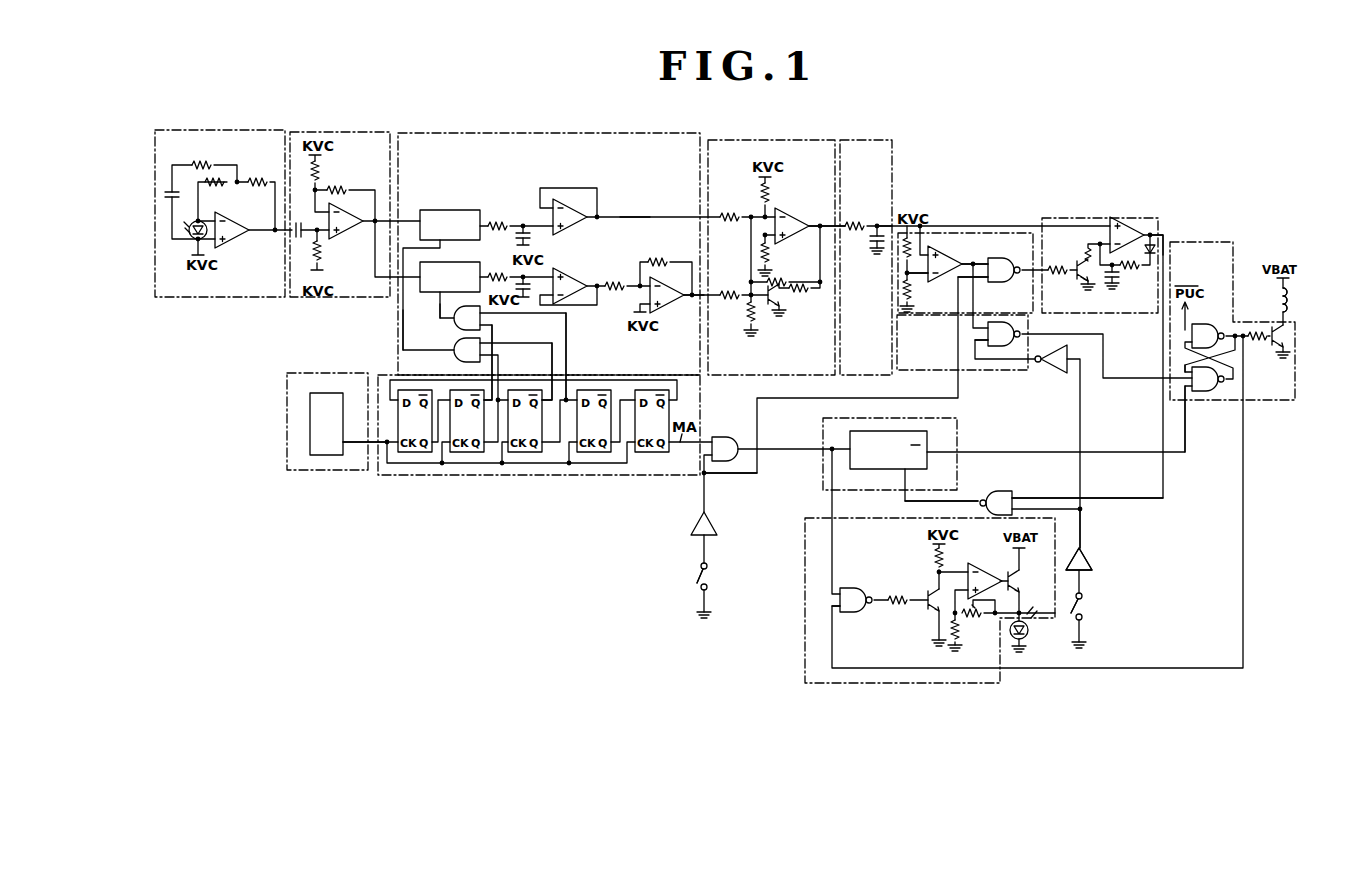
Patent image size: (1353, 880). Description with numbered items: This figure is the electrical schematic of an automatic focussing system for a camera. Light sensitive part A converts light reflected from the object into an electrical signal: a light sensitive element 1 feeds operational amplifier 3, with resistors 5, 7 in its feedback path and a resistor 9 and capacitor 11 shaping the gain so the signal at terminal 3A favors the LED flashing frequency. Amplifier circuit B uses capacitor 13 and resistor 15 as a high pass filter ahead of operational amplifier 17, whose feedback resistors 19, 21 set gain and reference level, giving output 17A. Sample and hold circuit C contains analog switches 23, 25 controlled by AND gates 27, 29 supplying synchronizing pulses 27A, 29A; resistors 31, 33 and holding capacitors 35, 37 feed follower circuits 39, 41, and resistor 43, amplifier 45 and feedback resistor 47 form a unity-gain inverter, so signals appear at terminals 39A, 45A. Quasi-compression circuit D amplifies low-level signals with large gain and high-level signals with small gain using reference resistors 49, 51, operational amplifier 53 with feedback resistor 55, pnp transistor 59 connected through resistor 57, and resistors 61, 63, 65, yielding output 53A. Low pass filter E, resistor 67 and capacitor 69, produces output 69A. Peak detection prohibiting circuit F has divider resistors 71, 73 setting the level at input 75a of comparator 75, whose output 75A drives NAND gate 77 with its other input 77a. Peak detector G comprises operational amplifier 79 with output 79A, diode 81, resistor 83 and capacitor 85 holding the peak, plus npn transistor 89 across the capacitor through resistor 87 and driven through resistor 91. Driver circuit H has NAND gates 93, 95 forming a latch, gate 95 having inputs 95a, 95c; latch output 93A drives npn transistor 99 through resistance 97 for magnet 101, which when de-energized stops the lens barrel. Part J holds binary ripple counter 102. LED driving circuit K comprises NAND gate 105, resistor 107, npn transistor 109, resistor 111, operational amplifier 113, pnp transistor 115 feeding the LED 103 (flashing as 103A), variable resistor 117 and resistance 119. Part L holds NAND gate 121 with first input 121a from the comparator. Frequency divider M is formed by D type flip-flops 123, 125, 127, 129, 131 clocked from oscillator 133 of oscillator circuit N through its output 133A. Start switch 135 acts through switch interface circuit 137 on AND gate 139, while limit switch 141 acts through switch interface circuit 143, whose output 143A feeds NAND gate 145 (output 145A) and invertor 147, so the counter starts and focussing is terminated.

The light sensitive element 1 is at (191, 222).
The operational amplifier 3 is at (230, 239).
The output terminal 3A is at (275, 234).
The resistor 5 is at (216, 185).
The resistor 7 is at (258, 186).
The resistor 9 is at (202, 163).
The capacitor 11 is at (165, 201).
The capacitor 13 is at (299, 238).
The resistor 15 is at (321, 256).
The operational amplifier 17 is at (350, 235).
The output signal of amplifier circuit 17A is at (374, 217).
The resistor 19 is at (339, 186).
The resistor 21 is at (311, 172).
The analog switch 23 is at (450, 225).
The analog switch 25 is at (450, 277).
The AND gate 27 is at (467, 318).
The synchronizing pulses 27A is at (440, 310).
The AND gate 29 is at (467, 350).
The synchronizing pulses 29A is at (403, 348).
The resistor 31 is at (499, 220).
The resistor 33 is at (499, 271).
The voltage holding capacitor 35 is at (527, 239).
The voltage holding capacitor 37 is at (527, 286).
The follower circuit 39 is at (572, 223).
The output terminal of follower circuit 39A is at (645, 215).
The second follower circuit 41 is at (571, 282).
The resistor 43 is at (616, 291).
The amplifier 45 is at (672, 310).
The output terminal of invertor 45A is at (692, 298).
The resistor 47 is at (661, 258).
The resistor 49 is at (770, 197).
The resistor 51 is at (770, 255).
The operational amplifier 53 is at (795, 211).
The output terminal of quasi-compression circuit 53A is at (822, 224).
The resistor 55 is at (783, 280).
The resistor 57 is at (800, 292).
The pnp transistor 59 is at (772, 308).
The resistor 61 is at (730, 212).
The resistor 63 is at (727, 292).
The resistor 65 is at (746, 313).
The resistor 67 is at (856, 220).
The capacitor 69 is at (871, 242).
The output terminal of low pass filter 69A is at (877, 222).
The resistor 71 is at (912, 245).
The resistor 73 is at (903, 290).
The comparator 75 is at (945, 268).
The output terminal of comparator 75A is at (973, 262).
The input terminal of comparator 75a is at (935, 280).
The NAND gate 77 is at (1004, 270).
The input terminal of NAND gate 77a is at (973, 279).
The operational amplifier 79 is at (1124, 221).
The output terminal of amplifier 79A is at (1163, 240).
The diode 81 is at (1150, 262).
The resistor 83 is at (1135, 270).
The capacitor 85 is at (1114, 280).
The resistor 87 is at (1082, 262).
The npn transistor 89 is at (1085, 283).
The resistor 91 is at (1056, 268).
The NAND gate 93 is at (1208, 336).
The output of NAND gate 93A is at (1243, 332).
The NAND gate 95 is at (1208, 379).
The NAND gate input 95a is at (1187, 395).
The NAND gate input 95c is at (1185, 368).
The resistance 97 is at (1258, 340).
The transistor 99 is at (1284, 338).
The magnet 101 is at (1284, 300).
The binary ripple counter 102 is at (927, 431).
The LED 103 is at (1028, 636).
The LED flashing signal 103A is at (1023, 612).
The NAND gate 105 is at (845, 589).
The resistor 107 is at (899, 595).
The npn transistor 109 is at (926, 607).
The resistor 111 is at (942, 559).
The operational amplifier 113 is at (975, 571).
The pnp transistor 115 is at (1014, 578).
The variable resistor 117 is at (972, 615).
The resistance 119 is at (958, 638).
The NAND gate 121 is at (1018, 328).
The first input terminal of NAND gate 121a is at (974, 334).
The D type flip-flop 123 is at (415, 452).
The D type flip-flop 125 is at (468, 452).
The D type flip-flop circuit 127 is at (526, 452).
The D type flip-flop 129 is at (595, 452).
The D type flip-flop 131 is at (653, 452).
The oscillator 133 is at (326, 424).
The clock output 133A is at (357, 444).
The start switch 135 is at (708, 577).
The switch interface circuit 137 is at (712, 524).
The AND gate 139 is at (722, 438).
The limit switch 141 is at (1082, 608).
The switch interface circuit 143 is at (1088, 561).
The output potential of interface circuit 143A is at (1081, 530).
The NAND gate 145 is at (1003, 493).
The output potential of NAND gate 145A is at (978, 498).
The invertor 147 is at (1062, 352).
The light sensitive part A is at (215, 130).
The amplifier circuit B is at (316, 132).
The sample and hold circuit C is at (483, 133).
The quasi-compression circuit D is at (790, 140).
The low pass filter E is at (858, 140).
The peak detection prohibiting circuit F is at (968, 233).
The peak detector G is at (1092, 218).
The driver circuit H is at (1216, 242).
The counter part J is at (955, 418).
The driving circuit for LED K is at (963, 683).
The NAND gate part L is at (1000, 370).
The frequency divider circuit M is at (548, 475).
The oscillator circuit N is at (313, 373).